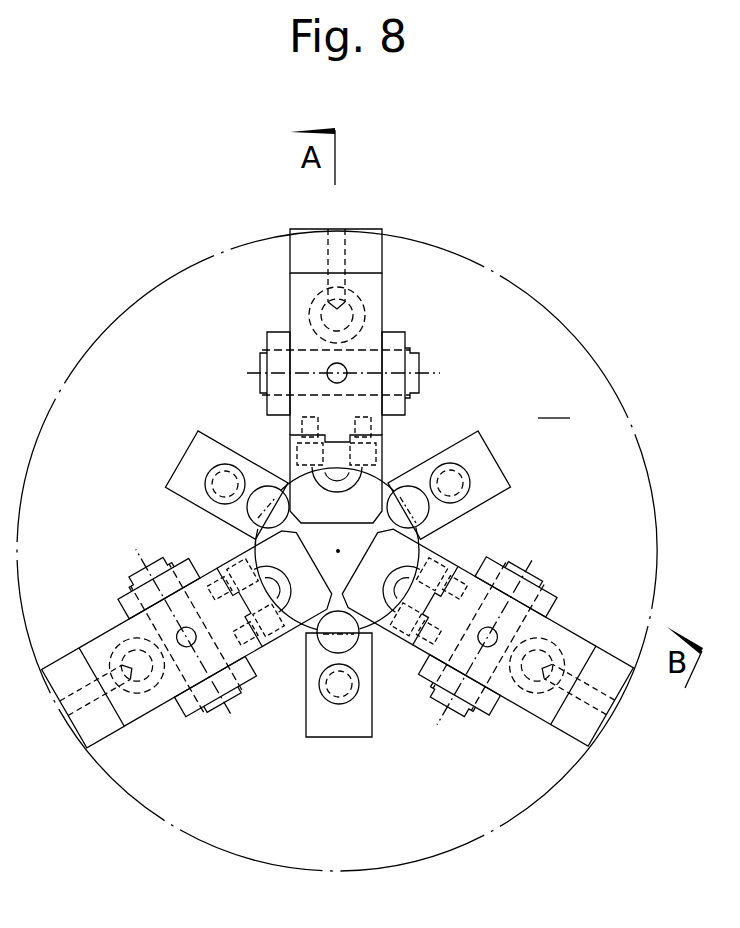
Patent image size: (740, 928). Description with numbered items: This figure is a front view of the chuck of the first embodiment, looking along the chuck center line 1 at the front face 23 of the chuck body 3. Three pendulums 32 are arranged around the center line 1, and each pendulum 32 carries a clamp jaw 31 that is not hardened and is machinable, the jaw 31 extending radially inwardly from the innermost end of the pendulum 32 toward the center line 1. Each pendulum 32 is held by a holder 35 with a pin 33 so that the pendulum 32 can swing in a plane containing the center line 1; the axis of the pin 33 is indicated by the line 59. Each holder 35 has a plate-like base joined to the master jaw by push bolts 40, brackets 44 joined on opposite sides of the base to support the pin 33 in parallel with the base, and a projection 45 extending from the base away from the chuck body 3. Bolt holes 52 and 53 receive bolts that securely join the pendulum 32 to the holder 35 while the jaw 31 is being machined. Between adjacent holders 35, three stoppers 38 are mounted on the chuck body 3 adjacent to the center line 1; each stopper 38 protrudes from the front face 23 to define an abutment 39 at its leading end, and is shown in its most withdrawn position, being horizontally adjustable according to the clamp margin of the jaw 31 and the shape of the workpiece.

The center line 1 is at (337, 552).
The chuck body 3 is at (577, 342).
The front face 23 is at (554, 403).
The clamp jaw 31 is at (387, 443).
The pendulum 32 is at (384, 297).
The pin 33 is at (420, 365).
The holder 35 is at (376, 222).
The stopper 38 is at (254, 484).
The abutment 39 is at (253, 516).
The push bolts 40 is at (309, 305).
The brackets 44 is at (267, 340).
The projection 45 is at (290, 228).
The bolt hole 52 is at (327, 368).
The bolt hole 53 is at (338, 238).
The axis of the pin 59 is at (442, 375).